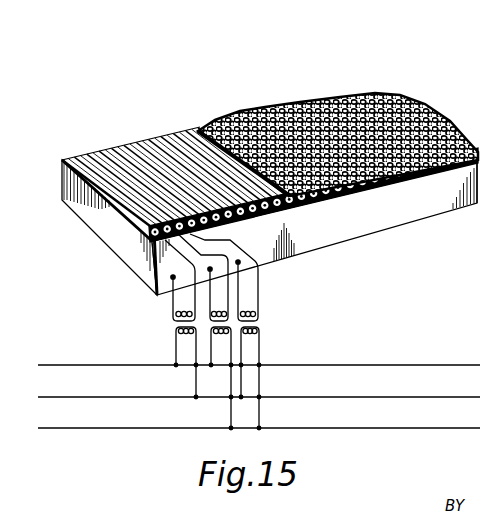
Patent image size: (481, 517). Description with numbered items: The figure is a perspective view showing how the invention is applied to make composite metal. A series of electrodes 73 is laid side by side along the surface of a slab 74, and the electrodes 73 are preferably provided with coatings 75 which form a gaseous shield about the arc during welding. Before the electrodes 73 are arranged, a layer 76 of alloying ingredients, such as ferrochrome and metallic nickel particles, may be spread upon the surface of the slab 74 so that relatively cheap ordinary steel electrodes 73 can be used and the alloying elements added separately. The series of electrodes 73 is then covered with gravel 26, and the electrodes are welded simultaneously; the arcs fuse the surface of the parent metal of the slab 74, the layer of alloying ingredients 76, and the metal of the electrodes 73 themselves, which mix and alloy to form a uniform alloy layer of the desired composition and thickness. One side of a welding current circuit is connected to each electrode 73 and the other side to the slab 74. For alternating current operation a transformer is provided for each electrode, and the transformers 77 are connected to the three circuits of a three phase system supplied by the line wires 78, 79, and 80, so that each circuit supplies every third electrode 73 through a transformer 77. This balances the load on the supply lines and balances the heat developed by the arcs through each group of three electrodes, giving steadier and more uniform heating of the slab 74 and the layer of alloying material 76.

The gravel 26 is at (261, 110).
The electrodes 73 is at (82, 157).
The slab 74 is at (117, 233).
The coatings 75 is at (150, 238).
The layer of alloying ingredients 76 is at (318, 203).
The transformers 77 is at (177, 322).
The line wire 78 is at (110, 364).
The line wire 79 is at (102, 396).
The line wire 80 is at (98, 427).